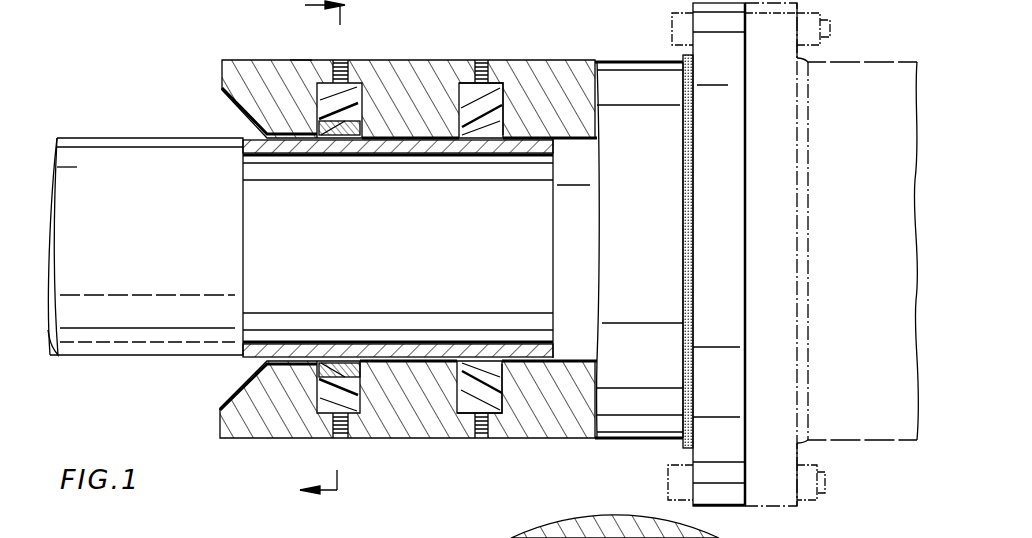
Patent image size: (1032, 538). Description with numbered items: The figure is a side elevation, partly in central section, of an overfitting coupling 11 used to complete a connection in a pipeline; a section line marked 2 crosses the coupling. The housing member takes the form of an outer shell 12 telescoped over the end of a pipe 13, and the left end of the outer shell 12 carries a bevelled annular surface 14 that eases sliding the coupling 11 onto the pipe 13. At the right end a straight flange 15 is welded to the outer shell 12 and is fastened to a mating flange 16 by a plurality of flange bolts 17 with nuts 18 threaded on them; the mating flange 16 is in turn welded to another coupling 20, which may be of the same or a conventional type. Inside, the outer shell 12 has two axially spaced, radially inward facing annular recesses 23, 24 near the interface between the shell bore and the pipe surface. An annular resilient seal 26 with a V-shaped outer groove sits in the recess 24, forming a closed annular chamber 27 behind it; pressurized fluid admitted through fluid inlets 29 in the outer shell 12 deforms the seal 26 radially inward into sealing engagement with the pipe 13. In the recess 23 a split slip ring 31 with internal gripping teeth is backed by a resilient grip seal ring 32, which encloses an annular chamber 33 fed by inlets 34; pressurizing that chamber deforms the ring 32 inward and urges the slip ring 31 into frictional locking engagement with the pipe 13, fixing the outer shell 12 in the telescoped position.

The section line II-II 2 is at (316, 247).
The coupling 11 is at (428, 60).
The outer shell 12 is at (581, 62).
The pipe 13 is at (149, 201).
The bevelled annular surface 14 is at (223, 103).
The straight flange 15 is at (722, 507).
The mating flange 16 is at (772, 506).
The flange bolts 17 is at (672, 23).
The nuts 18 is at (817, 500).
The coupling 20 is at (887, 447).
The annular recess 23 is at (300, 60).
The annular recess 24 is at (454, 92).
The annular resilient seal 26 is at (491, 134).
The annular chamber 27 is at (493, 90).
The fluid inlets 29 is at (481, 60).
The split slip ring 31 is at (352, 137).
The resilient grip seal ring 32 is at (336, 121).
The annular chamber 33 is at (355, 90).
The fluid inlets 34 is at (342, 60).